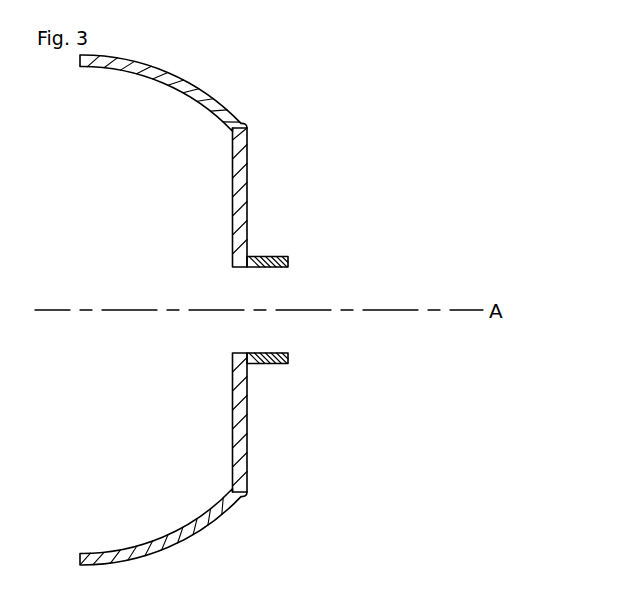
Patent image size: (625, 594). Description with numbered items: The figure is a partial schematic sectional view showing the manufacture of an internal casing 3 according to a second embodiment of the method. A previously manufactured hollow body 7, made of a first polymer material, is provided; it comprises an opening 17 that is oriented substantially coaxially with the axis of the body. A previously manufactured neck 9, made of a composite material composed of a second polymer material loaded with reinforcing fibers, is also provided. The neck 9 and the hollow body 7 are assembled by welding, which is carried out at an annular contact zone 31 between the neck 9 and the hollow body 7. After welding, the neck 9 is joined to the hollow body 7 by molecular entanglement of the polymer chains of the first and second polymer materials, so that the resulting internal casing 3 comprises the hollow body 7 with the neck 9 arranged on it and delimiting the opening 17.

The internal casing 3 is at (227, 310).
The hollow body 7 is at (173, 85).
The neck 9 is at (278, 255).
The opening 17 is at (232, 335).
The annular contact zone 31 is at (248, 363).